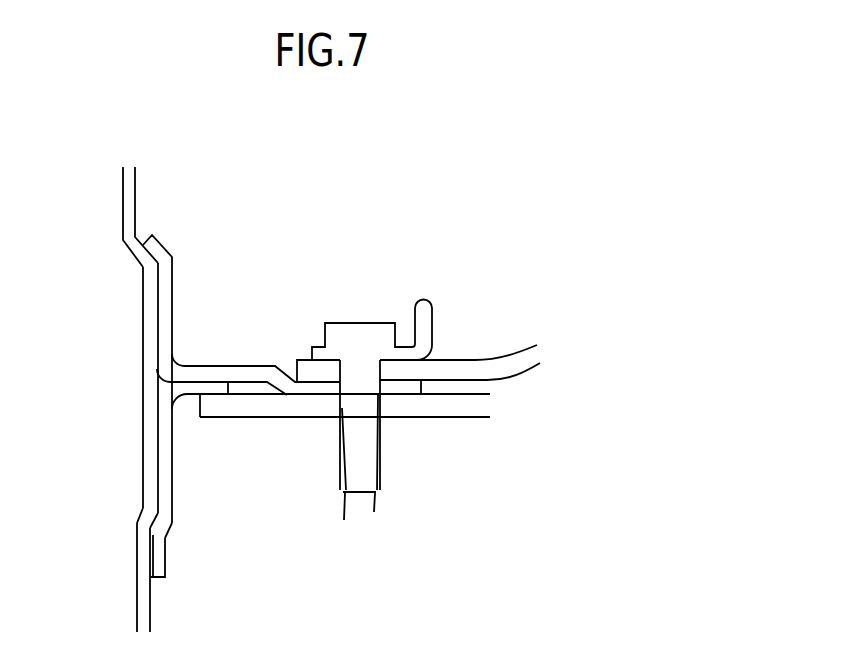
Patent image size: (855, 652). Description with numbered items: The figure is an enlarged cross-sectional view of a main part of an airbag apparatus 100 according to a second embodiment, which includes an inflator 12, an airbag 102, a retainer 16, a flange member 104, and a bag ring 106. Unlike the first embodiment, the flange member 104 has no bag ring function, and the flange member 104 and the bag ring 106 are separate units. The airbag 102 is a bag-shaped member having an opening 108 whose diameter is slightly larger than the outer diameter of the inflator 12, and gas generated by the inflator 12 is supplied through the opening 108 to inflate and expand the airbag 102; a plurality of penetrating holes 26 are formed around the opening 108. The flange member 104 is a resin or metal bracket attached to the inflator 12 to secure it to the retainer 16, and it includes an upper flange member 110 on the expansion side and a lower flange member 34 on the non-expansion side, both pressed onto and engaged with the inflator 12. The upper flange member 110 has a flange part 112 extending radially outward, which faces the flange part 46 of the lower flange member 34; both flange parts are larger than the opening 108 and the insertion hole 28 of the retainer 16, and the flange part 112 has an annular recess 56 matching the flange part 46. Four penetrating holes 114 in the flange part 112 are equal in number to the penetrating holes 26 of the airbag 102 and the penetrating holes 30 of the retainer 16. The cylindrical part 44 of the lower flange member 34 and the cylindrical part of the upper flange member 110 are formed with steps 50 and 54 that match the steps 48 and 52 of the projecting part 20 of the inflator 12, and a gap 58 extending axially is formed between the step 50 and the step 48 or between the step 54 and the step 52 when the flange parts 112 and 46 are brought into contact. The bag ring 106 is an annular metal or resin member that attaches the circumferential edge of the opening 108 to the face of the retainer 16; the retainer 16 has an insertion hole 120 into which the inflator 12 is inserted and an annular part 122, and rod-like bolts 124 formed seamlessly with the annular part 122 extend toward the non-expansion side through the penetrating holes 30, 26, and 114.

The airbag apparatus 100 is at (215, 202).
The inflator 12 is at (137, 597).
The retainer 16 is at (457, 406).
The projecting part 20 is at (150, 463).
The penetrating holes 26 is at (343, 368).
The insertion hole 28 is at (199, 410).
The penetrating holes 30 is at (344, 520).
The lower flange member 34 is at (174, 478).
The cylindrical part 44 is at (172, 435).
The flange part 46 is at (185, 405).
The step 48 is at (135, 256).
The step 50 is at (160, 240).
The step 52 is at (140, 513).
The step 54 is at (165, 533).
The annular recess 56 is at (270, 396).
The gap 58 is at (165, 540).
The airbag 102 is at (500, 352).
The flange member 104 is at (268, 475).
The bag ring 106 is at (436, 322).
The opening 108 is at (293, 372).
The upper flange member 110 is at (172, 328).
The flange part 112 is at (266, 378).
The penetrating holes 114 is at (342, 390).
The insertion hole 120 is at (313, 352).
The annular part 122 is at (412, 345).
The bolts 124 is at (374, 512).